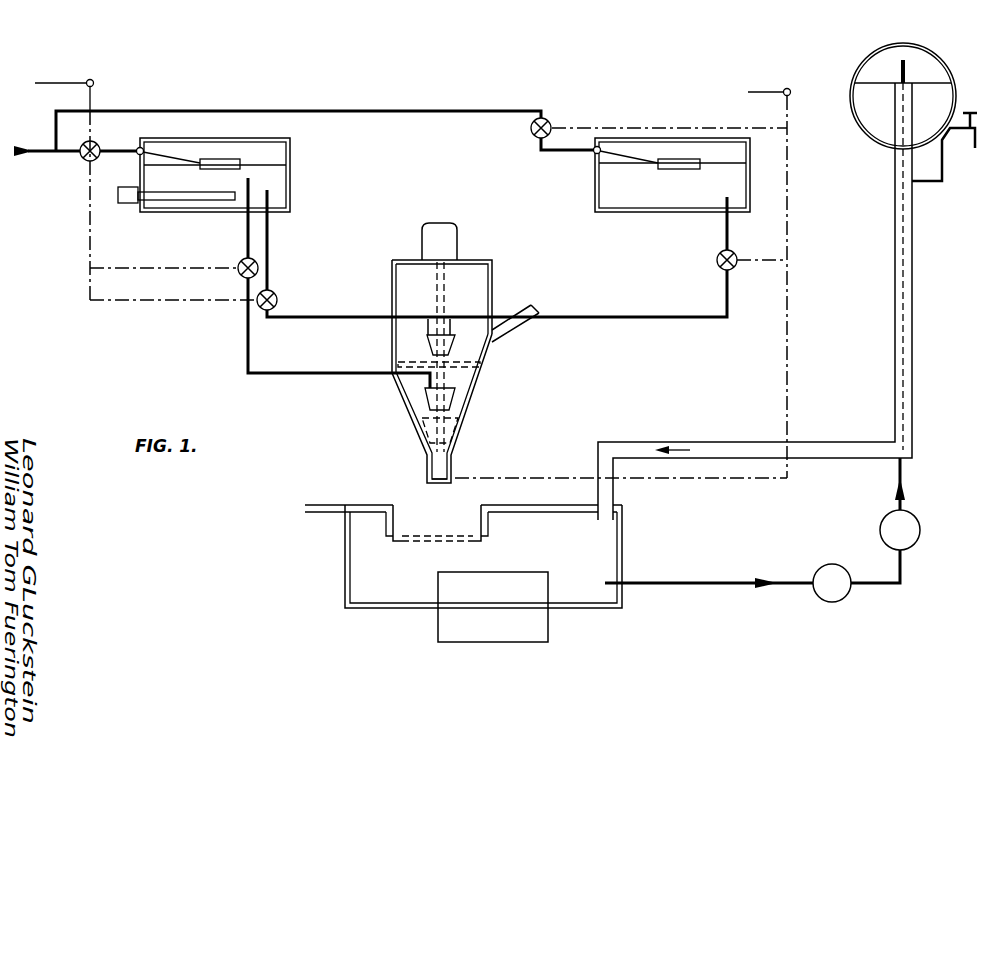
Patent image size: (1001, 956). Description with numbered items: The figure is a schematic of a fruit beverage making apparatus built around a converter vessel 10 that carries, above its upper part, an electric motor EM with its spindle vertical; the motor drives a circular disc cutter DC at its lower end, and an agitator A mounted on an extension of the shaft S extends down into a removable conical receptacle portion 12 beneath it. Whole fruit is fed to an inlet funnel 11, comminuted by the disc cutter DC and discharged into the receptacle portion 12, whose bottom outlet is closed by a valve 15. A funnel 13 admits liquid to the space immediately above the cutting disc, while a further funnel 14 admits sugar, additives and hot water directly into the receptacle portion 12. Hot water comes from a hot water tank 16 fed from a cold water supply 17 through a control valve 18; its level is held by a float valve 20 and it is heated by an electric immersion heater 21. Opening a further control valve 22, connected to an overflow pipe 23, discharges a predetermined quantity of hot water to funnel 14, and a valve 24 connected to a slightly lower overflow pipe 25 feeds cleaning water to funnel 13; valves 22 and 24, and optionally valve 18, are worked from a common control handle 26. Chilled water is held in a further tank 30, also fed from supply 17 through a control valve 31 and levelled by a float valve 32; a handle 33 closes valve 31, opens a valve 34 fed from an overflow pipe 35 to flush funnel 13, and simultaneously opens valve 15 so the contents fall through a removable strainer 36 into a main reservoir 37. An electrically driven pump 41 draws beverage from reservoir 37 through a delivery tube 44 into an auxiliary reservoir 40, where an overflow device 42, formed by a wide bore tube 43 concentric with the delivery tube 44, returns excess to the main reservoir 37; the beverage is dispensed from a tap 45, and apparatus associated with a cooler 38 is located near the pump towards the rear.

The converter vessel 10 is at (493, 284).
The inlet funnel 11 is at (525, 312).
The conical receptacle portion 12 is at (480, 410).
The funnel 13 is at (428, 344).
The further funnel 14 is at (425, 401).
The valve 15 is at (440, 485).
The hot water tank 16 is at (290, 194).
The cold water supply 17 is at (16, 156).
The control valve 18 is at (97, 146).
The float valve 20 is at (200, 160).
The electric immersion heater 21 is at (128, 204).
The further control valve 22 is at (241, 260).
The overflow pipe 23 is at (253, 183).
The valve 24 is at (278, 299).
The overflow pipe 25 is at (271, 196).
The control handle 26 is at (48, 83).
The further tank 30 is at (595, 187).
The control valve 31 is at (532, 131).
The float valve 32 is at (650, 159).
The handle 33 is at (773, 90).
The valve 34 is at (716, 262).
The overflow pipe 35 is at (718, 206).
The removable strainer 36 is at (398, 526).
The main reservoir 37 is at (345, 552).
The cooler 38 is at (438, 623).
The auxiliary reservoir 40 is at (866, 60).
The electrically driven pump 41 is at (848, 596).
The overflow device 42 is at (913, 130).
The wide bore tube 43 is at (894, 126).
The delivery tube 44 is at (912, 63).
The tap 45 is at (966, 138).
The shaft S is at (438, 283).
The electric motor EM is at (442, 232).
The circular disc cutter DC is at (482, 364).
The agitator A is at (452, 428).